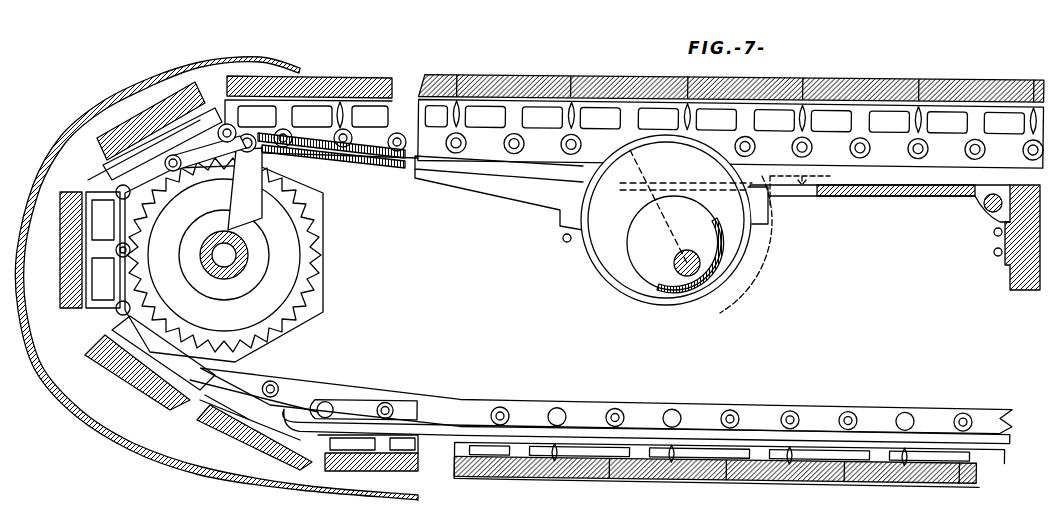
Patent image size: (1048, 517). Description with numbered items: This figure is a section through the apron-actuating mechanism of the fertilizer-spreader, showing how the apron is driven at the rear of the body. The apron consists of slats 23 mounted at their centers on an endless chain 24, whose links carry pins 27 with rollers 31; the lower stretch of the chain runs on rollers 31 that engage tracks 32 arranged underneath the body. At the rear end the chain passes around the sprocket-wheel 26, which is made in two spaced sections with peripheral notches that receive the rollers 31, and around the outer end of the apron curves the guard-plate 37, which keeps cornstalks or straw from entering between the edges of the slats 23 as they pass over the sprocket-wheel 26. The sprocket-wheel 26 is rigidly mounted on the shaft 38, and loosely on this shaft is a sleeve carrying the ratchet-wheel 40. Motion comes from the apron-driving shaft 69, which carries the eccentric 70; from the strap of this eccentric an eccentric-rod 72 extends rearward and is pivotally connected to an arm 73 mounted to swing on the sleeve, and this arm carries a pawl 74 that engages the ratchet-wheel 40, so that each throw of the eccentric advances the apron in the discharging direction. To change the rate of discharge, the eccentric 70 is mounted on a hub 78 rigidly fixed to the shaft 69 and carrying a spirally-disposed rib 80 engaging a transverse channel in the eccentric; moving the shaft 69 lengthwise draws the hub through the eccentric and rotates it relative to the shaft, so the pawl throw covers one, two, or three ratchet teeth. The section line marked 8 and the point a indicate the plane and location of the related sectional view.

The section indicator / pivot pin 8 is at (616, 137).
The slats 23 is at (490, 80).
The endless chain 24 is at (650, 400).
The sprocket-wheel 26 is at (325, 222).
The pins 27 is at (283, 392).
The rollers 31 is at (272, 386).
The tracks 32 is at (442, 425).
The guard-plate 37 is at (68, 402).
The shaft 38 is at (224, 268).
The ratchet-wheel 40 is at (300, 257).
The apron-driving shaft 69 is at (694, 273).
The eccentric 70 is at (625, 272).
The eccentric-rod 72 is at (528, 214).
The arm 73 is at (246, 152).
The pawl 74 is at (228, 160).
The hub 78 is at (668, 290).
The spirally-disposed rib 80 is at (722, 246).
The reference point a is at (433, 372).